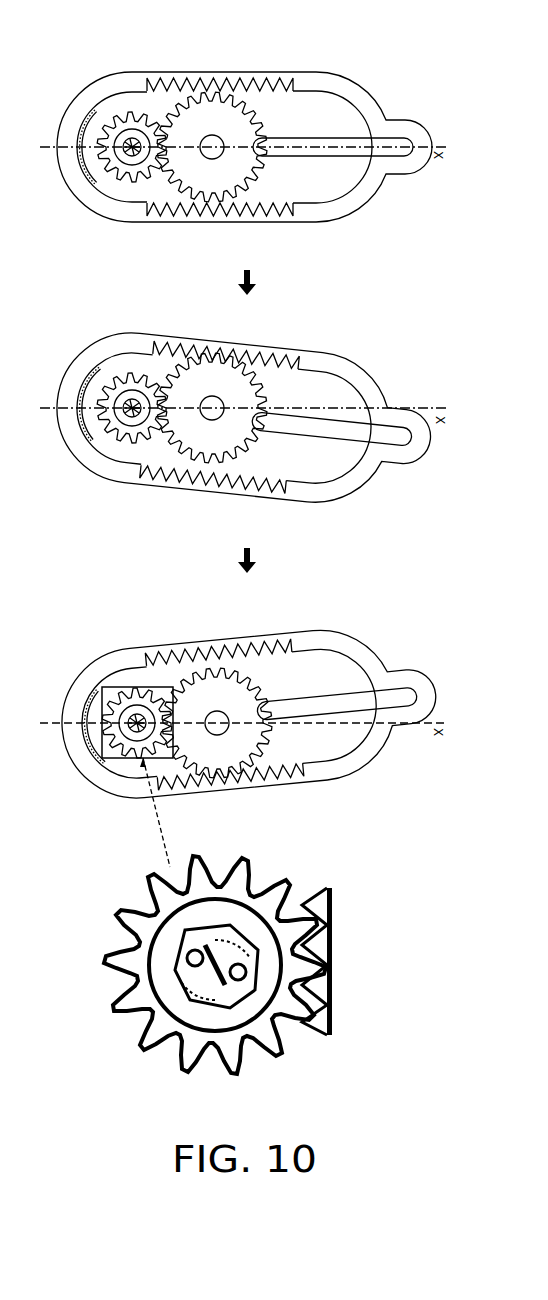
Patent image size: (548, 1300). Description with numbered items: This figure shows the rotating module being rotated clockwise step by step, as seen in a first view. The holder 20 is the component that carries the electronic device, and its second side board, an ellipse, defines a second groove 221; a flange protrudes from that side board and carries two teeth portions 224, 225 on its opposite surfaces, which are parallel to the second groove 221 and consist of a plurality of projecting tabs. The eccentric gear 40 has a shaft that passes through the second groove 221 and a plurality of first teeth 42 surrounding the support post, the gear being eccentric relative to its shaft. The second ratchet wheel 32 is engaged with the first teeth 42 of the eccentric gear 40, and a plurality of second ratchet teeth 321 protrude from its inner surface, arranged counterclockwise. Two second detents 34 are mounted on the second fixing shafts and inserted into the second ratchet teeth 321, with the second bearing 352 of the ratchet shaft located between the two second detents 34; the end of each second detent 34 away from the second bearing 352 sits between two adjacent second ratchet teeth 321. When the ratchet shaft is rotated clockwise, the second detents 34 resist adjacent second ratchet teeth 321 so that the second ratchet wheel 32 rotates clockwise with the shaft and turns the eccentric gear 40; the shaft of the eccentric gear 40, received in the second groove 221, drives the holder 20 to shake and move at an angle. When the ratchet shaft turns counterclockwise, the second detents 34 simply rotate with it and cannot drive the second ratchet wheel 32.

The holder 20 is at (383, 118).
The second groove 221 is at (385, 120).
The teeth portion 224 is at (277, 83).
The teeth portion 225 is at (282, 220).
The eccentric gear 40 is at (214, 436).
The first teeth 42 is at (228, 217).
The second ratchet wheel 32 is at (170, 217).
The second ratchet teeth 321 is at (117, 170).
The second detent 34 is at (97, 127).
The second bearing 352 is at (117, 132).